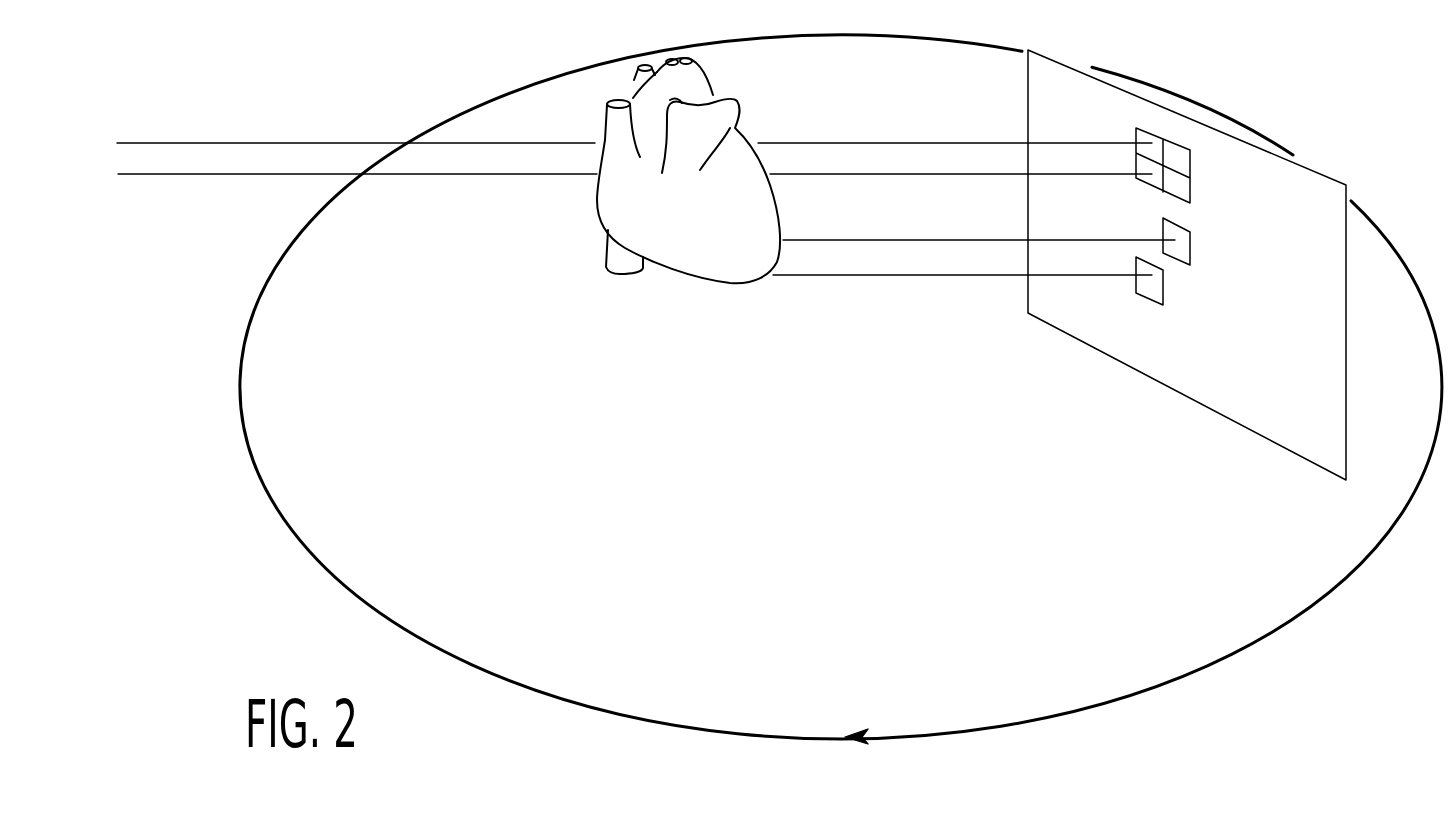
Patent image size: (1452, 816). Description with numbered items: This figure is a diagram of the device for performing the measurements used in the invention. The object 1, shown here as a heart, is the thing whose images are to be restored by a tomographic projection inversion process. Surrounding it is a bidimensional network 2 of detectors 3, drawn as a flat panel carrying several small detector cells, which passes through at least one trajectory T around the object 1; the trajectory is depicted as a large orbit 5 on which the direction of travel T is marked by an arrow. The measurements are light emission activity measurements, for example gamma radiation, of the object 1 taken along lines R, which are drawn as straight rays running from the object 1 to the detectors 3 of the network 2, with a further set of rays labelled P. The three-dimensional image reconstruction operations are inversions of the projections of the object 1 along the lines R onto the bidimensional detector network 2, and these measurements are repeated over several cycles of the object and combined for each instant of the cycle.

The object 1 is at (585, 200).
The bidimensional network of detectors 2 is at (1236, 118).
The detectors 3 is at (1183, 162).
The circular orbit of detector 5 is at (1208, 658).
The primary photon paths P is at (897, 177).
The lines R is at (888, 240).
The trajectory T is at (867, 751).